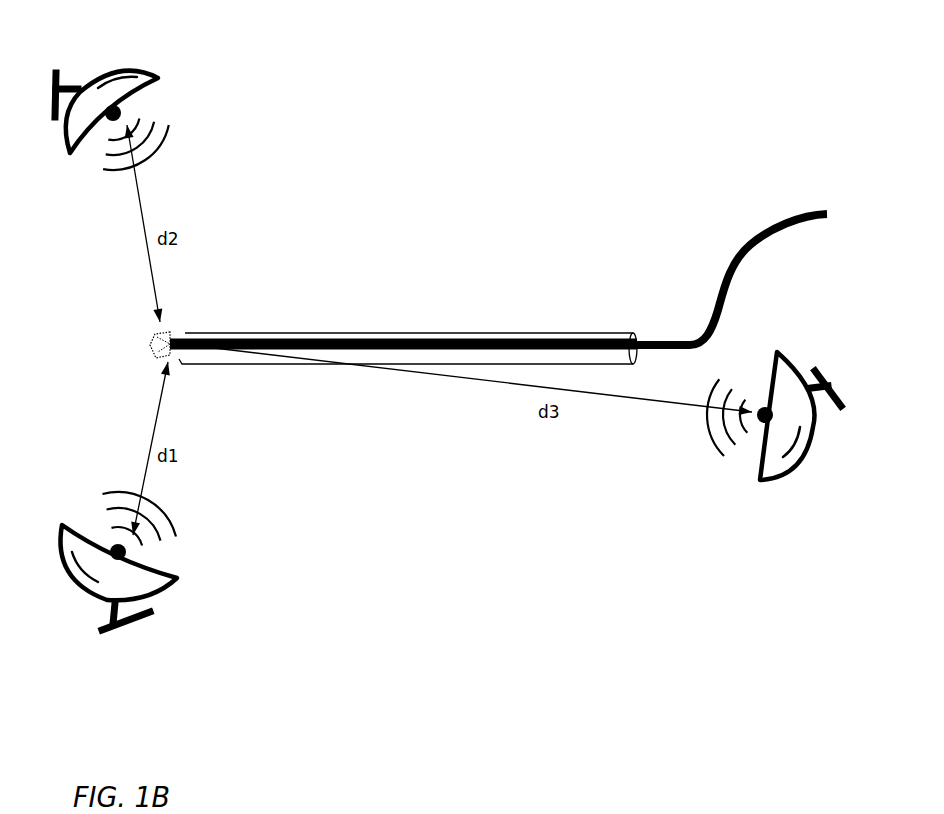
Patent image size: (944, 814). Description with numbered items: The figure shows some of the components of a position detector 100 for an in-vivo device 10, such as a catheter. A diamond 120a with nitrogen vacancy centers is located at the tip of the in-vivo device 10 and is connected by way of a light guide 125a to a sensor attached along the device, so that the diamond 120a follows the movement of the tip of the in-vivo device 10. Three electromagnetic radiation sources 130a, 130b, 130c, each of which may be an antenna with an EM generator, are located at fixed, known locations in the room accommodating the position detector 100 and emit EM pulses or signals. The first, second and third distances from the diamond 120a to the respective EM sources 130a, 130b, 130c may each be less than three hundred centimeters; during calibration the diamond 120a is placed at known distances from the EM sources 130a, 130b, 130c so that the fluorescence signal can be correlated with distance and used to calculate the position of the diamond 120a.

The position detector 100 is at (622, 148).
The first electromagnetic radiation source 130a is at (177, 577).
The second electromagnetic radiation source 130b is at (137, 82).
The third electromagnetic radiation source 130c is at (760, 463).
The in-vivo device 10 is at (443, 358).
The light guide 125a is at (373, 342).
The diamond 120a is at (173, 325).